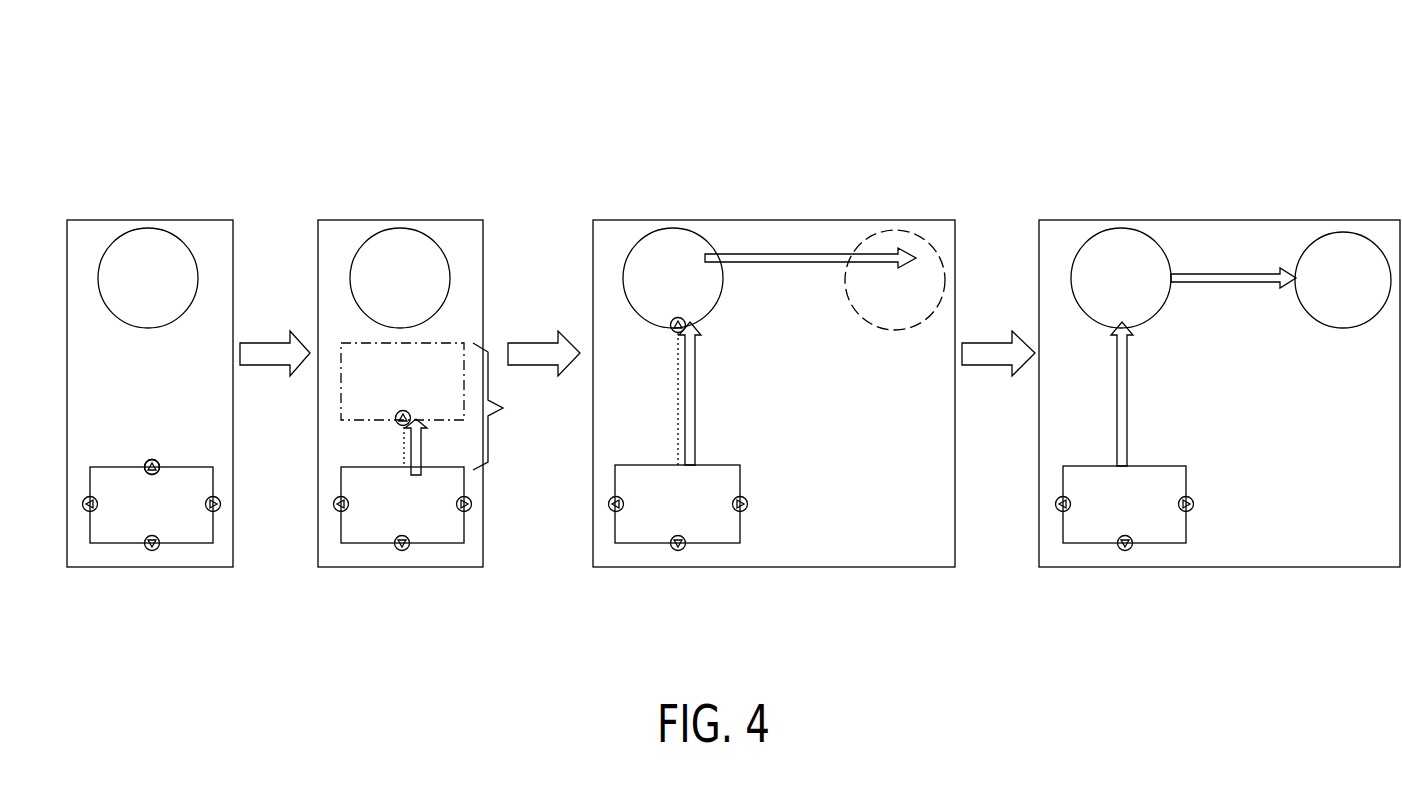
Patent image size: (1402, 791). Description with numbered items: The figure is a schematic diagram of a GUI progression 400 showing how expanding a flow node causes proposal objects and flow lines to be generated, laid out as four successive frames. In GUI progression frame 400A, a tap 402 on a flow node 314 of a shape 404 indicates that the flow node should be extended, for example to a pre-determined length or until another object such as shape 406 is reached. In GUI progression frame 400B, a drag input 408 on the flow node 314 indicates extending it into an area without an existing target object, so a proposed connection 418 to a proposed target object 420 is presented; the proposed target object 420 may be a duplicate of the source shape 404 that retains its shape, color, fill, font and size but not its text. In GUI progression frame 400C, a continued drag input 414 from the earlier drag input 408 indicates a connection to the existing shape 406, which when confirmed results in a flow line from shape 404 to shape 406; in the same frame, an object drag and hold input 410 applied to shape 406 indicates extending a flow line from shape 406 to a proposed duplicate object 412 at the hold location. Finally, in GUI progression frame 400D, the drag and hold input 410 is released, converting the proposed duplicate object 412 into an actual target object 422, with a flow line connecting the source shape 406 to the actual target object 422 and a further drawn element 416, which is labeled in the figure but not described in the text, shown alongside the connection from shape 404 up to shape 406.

The GUI progression 400 is at (149, 139).
The GUI progression frame 400A is at (233, 592).
The GUI progression frame 400B is at (483, 592).
The GUI progression frame 400C is at (955, 592).
The GUI progression frame 400D is at (1400, 592).
The flow node 314 is at (146, 461).
The tap 402 is at (161, 461).
The shape 404 is at (173, 516).
The shape 406 is at (169, 297).
The drag input 408 is at (413, 411).
The object drag and hold input 410 is at (905, 247).
The proposed duplicate object 412 is at (916, 315).
The continued drag input 414 is at (689, 318).
The transfer arrow 416 is at (1130, 398).
The proposed connection 418 is at (512, 406).
The proposed target object 420 is at (421, 380).
The actual target object 422 is at (1364, 315).